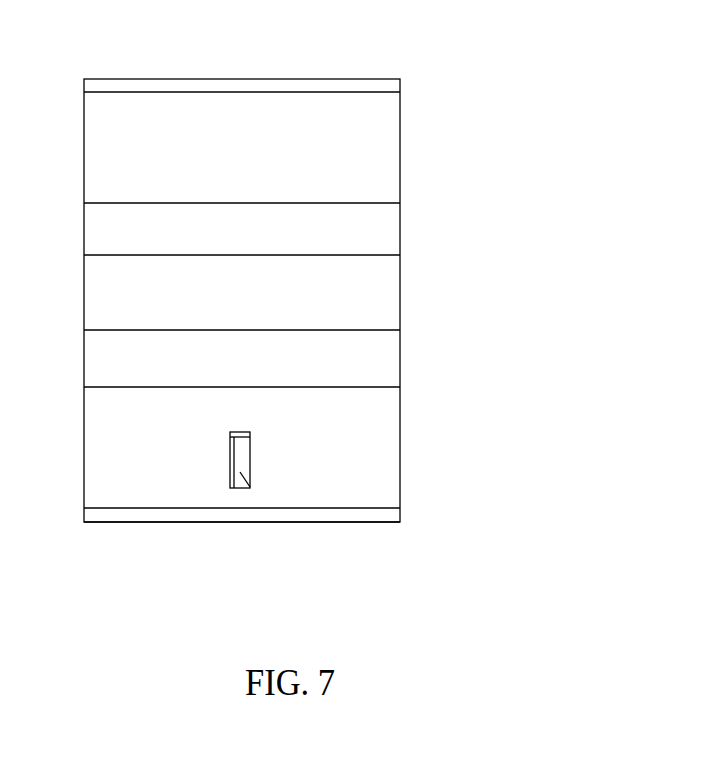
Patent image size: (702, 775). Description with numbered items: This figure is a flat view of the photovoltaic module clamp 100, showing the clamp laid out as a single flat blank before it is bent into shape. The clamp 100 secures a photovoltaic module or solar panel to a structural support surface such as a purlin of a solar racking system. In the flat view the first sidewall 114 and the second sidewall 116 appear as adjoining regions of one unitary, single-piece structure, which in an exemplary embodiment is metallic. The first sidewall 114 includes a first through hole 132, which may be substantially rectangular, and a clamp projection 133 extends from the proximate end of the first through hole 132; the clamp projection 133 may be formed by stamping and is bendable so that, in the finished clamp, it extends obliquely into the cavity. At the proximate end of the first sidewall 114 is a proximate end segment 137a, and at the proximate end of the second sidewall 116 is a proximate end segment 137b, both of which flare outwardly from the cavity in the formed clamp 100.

The photovoltaic module clamp 100 is at (475, 108).
The first sidewall 114 is at (382, 488).
The second sidewall 116 is at (380, 184).
The first through hole 132 is at (250, 434).
The clamp projection 133 is at (250, 487).
The proximate end segment 137a is at (380, 517).
The proximate end segment 137b is at (389, 89).